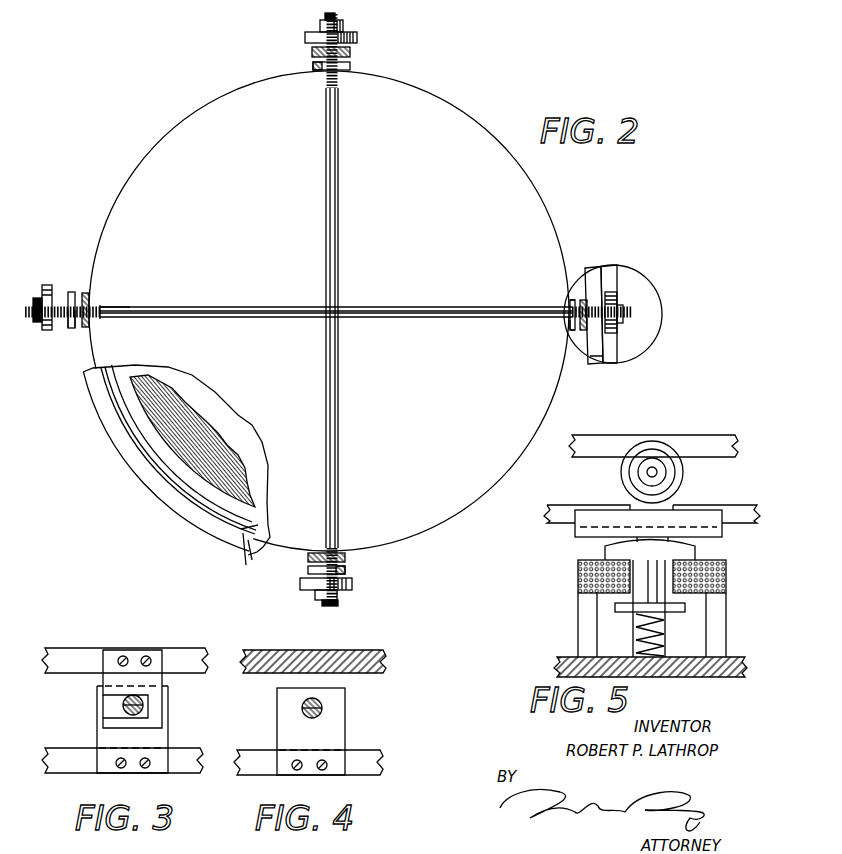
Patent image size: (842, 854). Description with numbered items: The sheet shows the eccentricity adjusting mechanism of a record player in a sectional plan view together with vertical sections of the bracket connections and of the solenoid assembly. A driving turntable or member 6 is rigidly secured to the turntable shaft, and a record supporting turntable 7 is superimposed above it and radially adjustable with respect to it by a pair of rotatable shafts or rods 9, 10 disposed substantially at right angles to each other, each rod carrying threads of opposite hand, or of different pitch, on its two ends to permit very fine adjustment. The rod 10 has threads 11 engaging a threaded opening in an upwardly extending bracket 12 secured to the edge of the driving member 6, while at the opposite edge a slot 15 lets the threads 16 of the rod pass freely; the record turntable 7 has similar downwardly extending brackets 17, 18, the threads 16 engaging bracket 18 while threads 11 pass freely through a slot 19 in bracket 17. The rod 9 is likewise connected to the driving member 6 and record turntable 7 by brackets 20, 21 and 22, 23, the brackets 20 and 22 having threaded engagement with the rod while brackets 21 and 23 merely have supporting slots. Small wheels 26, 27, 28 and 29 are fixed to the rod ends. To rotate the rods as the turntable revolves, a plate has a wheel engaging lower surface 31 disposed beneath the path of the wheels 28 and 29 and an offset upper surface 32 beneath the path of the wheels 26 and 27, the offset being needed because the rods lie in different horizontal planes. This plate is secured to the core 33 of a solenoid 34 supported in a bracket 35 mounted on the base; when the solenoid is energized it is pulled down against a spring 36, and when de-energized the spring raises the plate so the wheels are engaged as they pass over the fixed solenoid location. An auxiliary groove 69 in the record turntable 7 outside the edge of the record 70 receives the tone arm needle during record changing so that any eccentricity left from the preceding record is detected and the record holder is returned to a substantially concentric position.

In FIG. 2, the driving turntable or member 6 is at (456, 104).
In FIG. 5, the driving turntable or member 6 is at (562, 506).
In FIG. 3, the driving turntable or member 6 is at (122, 760).
In FIG. 4, the driving turntable or member 6 is at (372, 758).
In FIG. 2, the record supporting turntable 7 is at (128, 450).
In FIG. 5, the record supporting turntable 7 is at (602, 450).
In FIG. 3, the record supporting turntable 7 is at (190, 655).
In FIG. 4, the record supporting turntable 7 is at (378, 655).
In FIG. 2, the rotatable shaft or rod 9 is at (340, 250).
In FIG. 2, the rotatable shaft or rod 10 is at (394, 308).
In FIG. 3, the rotatable shaft or rod 10 is at (144, 706).
In FIG. 4, the rotatable shaft or rod 10 is at (302, 709).
In FIG. 2, the threads 11 is at (100, 315).
In FIG. 3, the threads 11 is at (126, 708).
In FIG. 4, the threads 11 is at (300, 714).
In FIG. 2, the upwardly extending bracket 12 is at (85, 328).
In FIG. 3, the upwardly extending bracket 12 is at (165, 739).
In FIG. 4, the upwardly extending bracket 12 is at (340, 728).
In FIG. 2, the slot 15 is at (570, 322).
In FIG. 2, the threads 16 is at (570, 308).
In FIG. 2, the downwardly extending bracket 17 is at (72, 328).
In FIG. 3, the downwardly extending bracket 17 is at (155, 680).
In FIG. 2, the downwardly extending bracket 18 is at (583, 300).
In FIG. 2, the slot 19 is at (71, 292).
In FIG. 3, the slot 19 is at (104, 698).
In FIG. 2, the bracket 20 is at (352, 52).
In FIG. 2, the bracket 21 is at (347, 572).
In FIG. 2, the bracket 22 is at (344, 554).
In FIG. 2, the bracket 23 is at (312, 66).
In FIG. 2, the small wheel 26 is at (618, 300).
In FIG. 5, the small wheel 26 is at (684, 474).
In FIG. 2, the small wheel 27 is at (45, 290).
In FIG. 2, the small wheel 28 is at (345, 32).
In FIG. 2, the small wheel 29 is at (352, 588).
In FIG. 2, the wheel engaging lower surface 31 is at (596, 360).
In FIG. 5, the wheel engaging lower surface 31 is at (590, 525).
In FIG. 2, the wheel engaging upper surface 32 is at (608, 270).
In FIG. 5, the wheel engaging upper surface 32 is at (690, 510).
In FIG. 5, the core 33 is at (685, 549).
In FIG. 2, the solenoid 34 is at (662, 316).
In FIG. 5, the solenoid 34 is at (571, 580).
In FIG. 5, the bracket 35 is at (583, 638).
In FIG. 5, the spring 36 is at (664, 628).
In FIG. 2, the auxiliary groove 69 is at (250, 556).
In FIG. 2, the record 70 is at (208, 442).